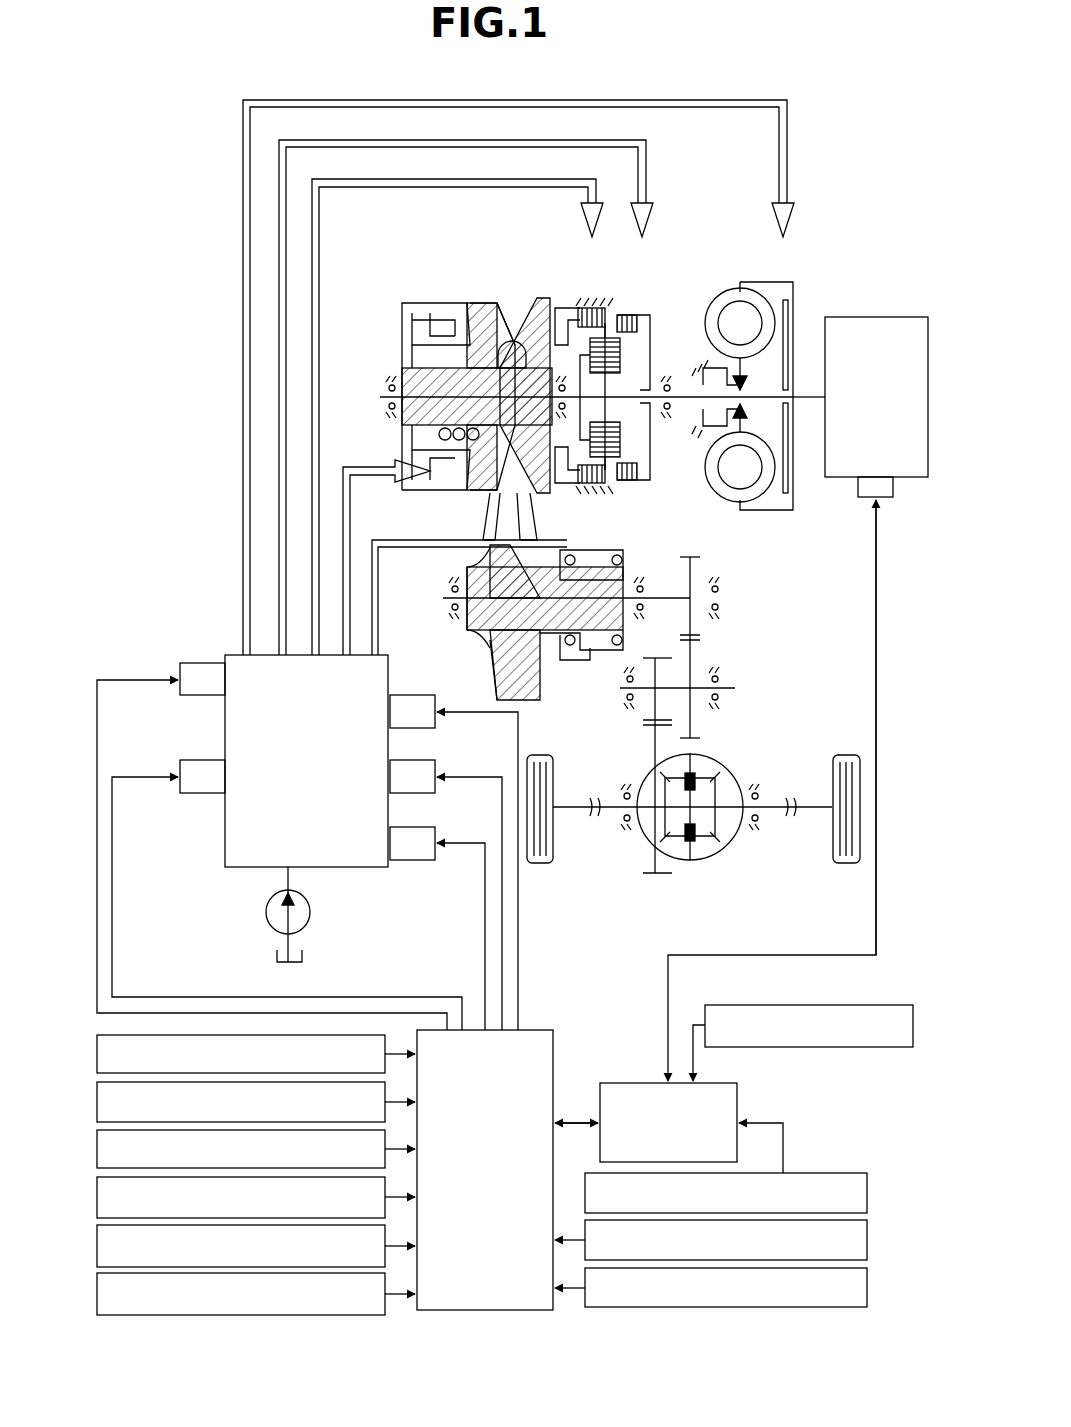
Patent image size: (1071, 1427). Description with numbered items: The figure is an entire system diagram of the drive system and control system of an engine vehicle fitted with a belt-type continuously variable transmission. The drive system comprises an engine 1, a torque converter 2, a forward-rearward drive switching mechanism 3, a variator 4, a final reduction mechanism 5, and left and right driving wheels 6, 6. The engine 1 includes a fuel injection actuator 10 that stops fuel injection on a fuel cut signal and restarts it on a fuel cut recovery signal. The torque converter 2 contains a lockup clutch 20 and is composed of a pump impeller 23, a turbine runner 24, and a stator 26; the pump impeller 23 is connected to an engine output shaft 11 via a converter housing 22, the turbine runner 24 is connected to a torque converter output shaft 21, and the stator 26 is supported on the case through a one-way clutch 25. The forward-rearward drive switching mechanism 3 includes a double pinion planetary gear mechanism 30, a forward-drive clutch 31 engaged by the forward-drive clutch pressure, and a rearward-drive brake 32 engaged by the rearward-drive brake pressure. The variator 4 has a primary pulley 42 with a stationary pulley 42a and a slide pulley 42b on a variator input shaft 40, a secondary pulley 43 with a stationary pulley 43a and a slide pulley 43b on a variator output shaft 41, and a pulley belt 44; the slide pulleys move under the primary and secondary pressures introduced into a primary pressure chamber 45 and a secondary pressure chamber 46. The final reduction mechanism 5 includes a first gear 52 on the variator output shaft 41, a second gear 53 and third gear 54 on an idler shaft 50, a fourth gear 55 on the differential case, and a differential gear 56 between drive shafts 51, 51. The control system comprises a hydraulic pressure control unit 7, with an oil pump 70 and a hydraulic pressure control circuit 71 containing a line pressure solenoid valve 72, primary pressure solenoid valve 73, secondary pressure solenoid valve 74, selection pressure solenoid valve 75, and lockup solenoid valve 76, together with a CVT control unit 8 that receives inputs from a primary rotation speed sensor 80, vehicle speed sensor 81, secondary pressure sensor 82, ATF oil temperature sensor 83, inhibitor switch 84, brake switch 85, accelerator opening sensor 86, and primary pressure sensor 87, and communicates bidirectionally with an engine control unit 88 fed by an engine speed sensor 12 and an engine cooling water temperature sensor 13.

The engine 1 is at (876, 315).
The torque converter 2 is at (742, 281).
The forward-rearward drive switching mechanism 3 is at (592, 300).
The variator 4 is at (447, 300).
The final reduction mechanism 5 is at (738, 665).
The driving wheels 6 is at (545, 866).
The hydraulic pressure control unit 7 is at (190, 617).
The CVT control unit 8 is at (538, 1026).
The fuel injection actuator 10 is at (893, 492).
The engine output shaft 11 is at (812, 400).
The engine speed sensor 12 is at (885, 1049).
The engine cooling water temperature sensor 13 is at (868, 1197).
The lockup clutch 20 is at (790, 350).
The torque converter output shaft 21 is at (712, 412).
The converter housing 22 is at (760, 290).
The pump impeller 23 is at (724, 310).
The turbine runner 24 is at (765, 505).
The one-way clutch 25 is at (735, 383).
The stator 26 is at (738, 340).
The double pinion planetary gear mechanism 30 is at (608, 462).
The forward-drive clutch 31 is at (628, 313).
The rearward-drive brake 32 is at (586, 307).
The variator input shaft 40 is at (440, 375).
The variator output shaft 41 is at (620, 585).
The primary pulley 42 is at (400, 322).
The stationary pulley 42a is at (545, 298).
The slide pulley 42b is at (470, 320).
The secondary pulley 43 is at (470, 632).
The stationary pulley 43a is at (470, 660).
The slide pulley 43b is at (520, 700).
The pulley belt 44 is at (505, 508).
The primary pressure chamber 45 is at (430, 318).
The secondary pressure chamber 46 is at (585, 700).
The idler shaft 50 is at (715, 702).
The drive shafts 51 is at (578, 805).
The first gear 52 is at (692, 578).
The second gear 53 is at (702, 640).
The third gear 54 is at (650, 665).
The fourth gear 55 is at (660, 740).
The differential gear 56 is at (735, 788).
The oil pump 70 is at (270, 922).
The hydraulic pressure control circuit 71 is at (225, 862).
The line pressure solenoid valve 72 is at (410, 862).
The primary pressure solenoid valve 73 is at (412, 795).
The secondary pressure solenoid valve 74 is at (412, 730).
The selection pressure solenoid valve 75 is at (218, 795).
The lockup solenoid valve 76 is at (218, 697).
The primary rotation speed sensor 80 is at (96, 1058).
The vehicle speed sensor 81 is at (96, 1106).
The secondary pressure sensor 82 is at (96, 1153).
The ATF oil temperature sensor 83 is at (96, 1201).
The inhibitor switch 84 is at (96, 1250).
The brake switch 85 is at (96, 1298).
The accelerator opening sensor 86 is at (868, 1243).
The primary pressure sensor 87 is at (868, 1291).
The engine control unit 88 is at (740, 1086).